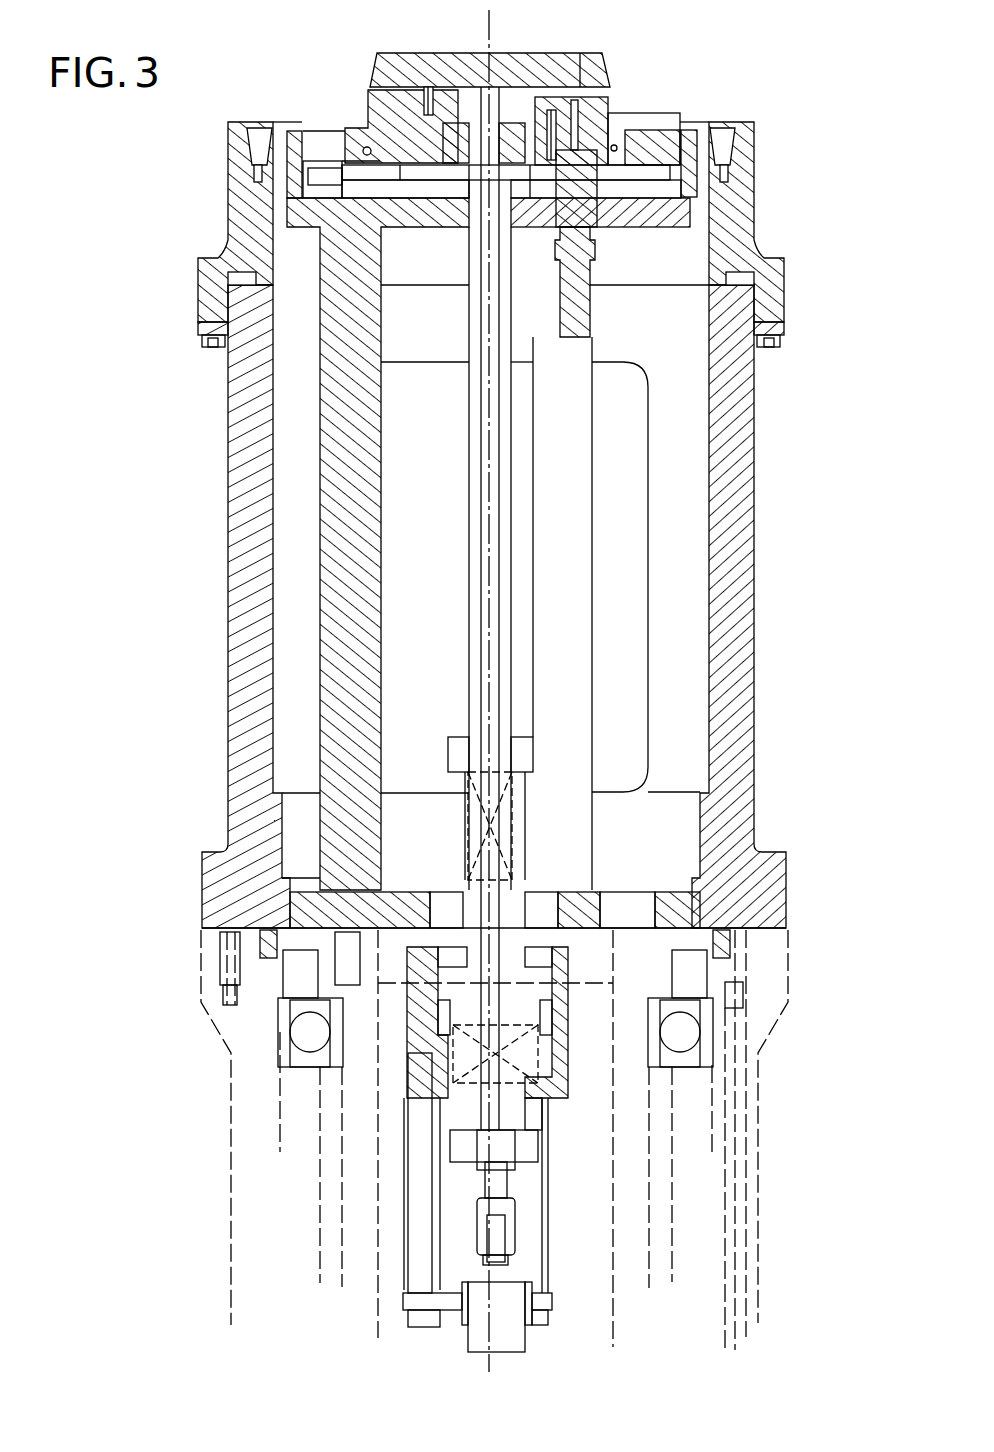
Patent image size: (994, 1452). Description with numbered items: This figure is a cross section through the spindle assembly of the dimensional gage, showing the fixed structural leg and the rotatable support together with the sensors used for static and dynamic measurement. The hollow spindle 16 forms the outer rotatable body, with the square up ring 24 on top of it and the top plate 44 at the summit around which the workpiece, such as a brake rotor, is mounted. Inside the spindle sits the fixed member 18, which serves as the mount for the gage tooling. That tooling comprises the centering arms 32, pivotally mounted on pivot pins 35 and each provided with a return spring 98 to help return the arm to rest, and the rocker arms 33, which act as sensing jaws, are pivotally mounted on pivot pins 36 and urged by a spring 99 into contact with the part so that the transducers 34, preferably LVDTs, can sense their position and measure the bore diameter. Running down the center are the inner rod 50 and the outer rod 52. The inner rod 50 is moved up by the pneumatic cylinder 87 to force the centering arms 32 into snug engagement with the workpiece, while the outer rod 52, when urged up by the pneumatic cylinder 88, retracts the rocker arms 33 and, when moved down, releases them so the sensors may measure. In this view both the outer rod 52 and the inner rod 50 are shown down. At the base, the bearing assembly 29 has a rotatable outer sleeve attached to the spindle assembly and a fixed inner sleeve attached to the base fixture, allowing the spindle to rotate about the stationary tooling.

The spindle 16 is at (240, 527).
The fixed member 18 is at (347, 608).
The square up ring 24 is at (745, 205).
The bearing assembly 29 is at (298, 1030).
The centering arm 32 is at (390, 100).
The rocker arm 33 is at (588, 110).
The transducer 34 is at (578, 310).
The pivot pin 35 is at (362, 151).
The pivot pin 36 is at (640, 128).
The top plate 44 is at (583, 72).
The inner rod 50 is at (497, 464).
The outer rod 52 is at (507, 525).
The pneumatic cylinder 87 is at (507, 1330).
The pneumatic cylinder 88 is at (537, 1073).
The return spring 98 is at (426, 92).
The spring 99 is at (530, 108).